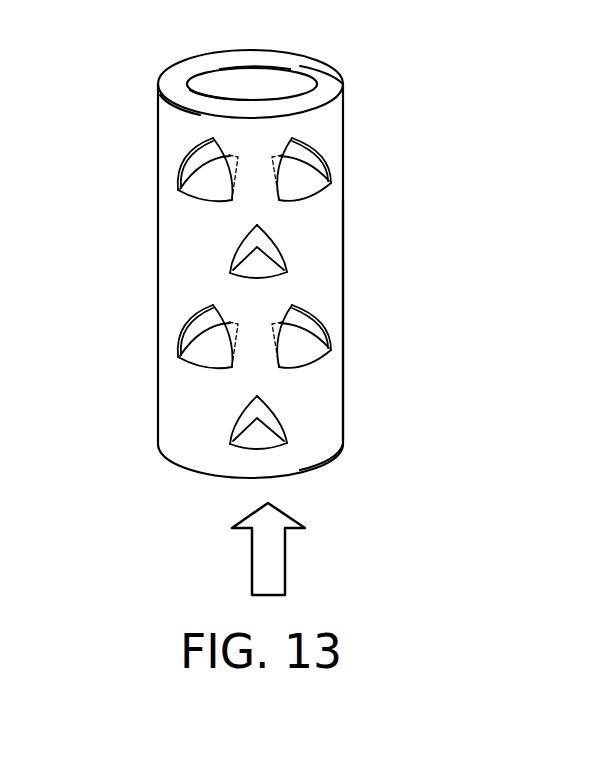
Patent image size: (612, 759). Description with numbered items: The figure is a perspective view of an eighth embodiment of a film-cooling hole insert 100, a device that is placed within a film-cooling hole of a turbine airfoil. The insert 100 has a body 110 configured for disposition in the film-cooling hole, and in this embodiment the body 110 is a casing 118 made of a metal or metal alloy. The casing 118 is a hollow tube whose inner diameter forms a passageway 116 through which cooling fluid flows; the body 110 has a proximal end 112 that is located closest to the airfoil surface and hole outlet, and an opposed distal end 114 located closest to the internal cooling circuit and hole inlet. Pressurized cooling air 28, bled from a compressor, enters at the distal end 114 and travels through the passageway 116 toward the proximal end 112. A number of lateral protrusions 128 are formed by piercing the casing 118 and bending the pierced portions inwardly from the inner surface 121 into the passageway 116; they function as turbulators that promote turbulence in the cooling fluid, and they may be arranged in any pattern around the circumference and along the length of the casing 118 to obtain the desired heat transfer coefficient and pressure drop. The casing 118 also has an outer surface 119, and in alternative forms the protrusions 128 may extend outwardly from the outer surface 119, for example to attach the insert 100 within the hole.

The film-cooling hole insert 100 is at (352, 151).
The body 110 is at (310, 390).
The proximal end 112 is at (180, 111).
The distal end 114 is at (320, 471).
The passageway 116 is at (272, 82).
The casing 118 is at (331, 88).
The outer surface 119 is at (320, 265).
The inner surface 121 is at (192, 88).
The lateral protrusions 128 is at (300, 183).
The cooling air 28 is at (285, 548).